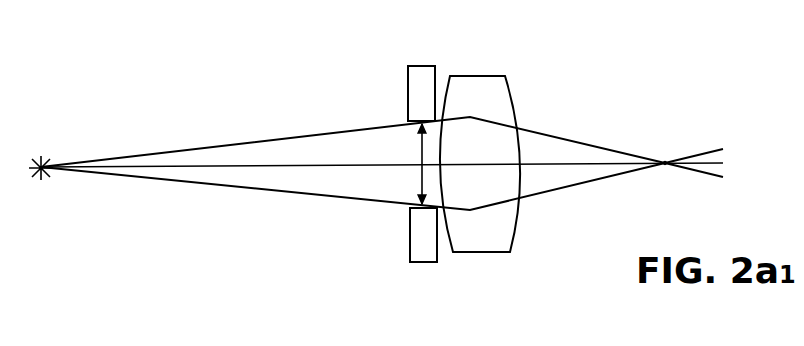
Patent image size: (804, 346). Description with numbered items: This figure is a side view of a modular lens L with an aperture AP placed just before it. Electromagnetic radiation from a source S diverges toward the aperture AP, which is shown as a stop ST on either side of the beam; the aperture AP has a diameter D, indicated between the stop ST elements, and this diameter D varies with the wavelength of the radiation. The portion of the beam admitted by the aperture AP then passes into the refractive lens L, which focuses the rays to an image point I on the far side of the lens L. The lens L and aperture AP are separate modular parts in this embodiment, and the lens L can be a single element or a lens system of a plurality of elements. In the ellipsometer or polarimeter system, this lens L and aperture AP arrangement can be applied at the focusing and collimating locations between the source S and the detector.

The source of electromagnetic radiation S is at (43, 156).
The stop (aperture stop) ST is at (418, 65).
The lens L is at (509, 73).
The aperture diameter D is at (413, 164).
The aperture AP is at (369, 210).
The image point I is at (663, 171).